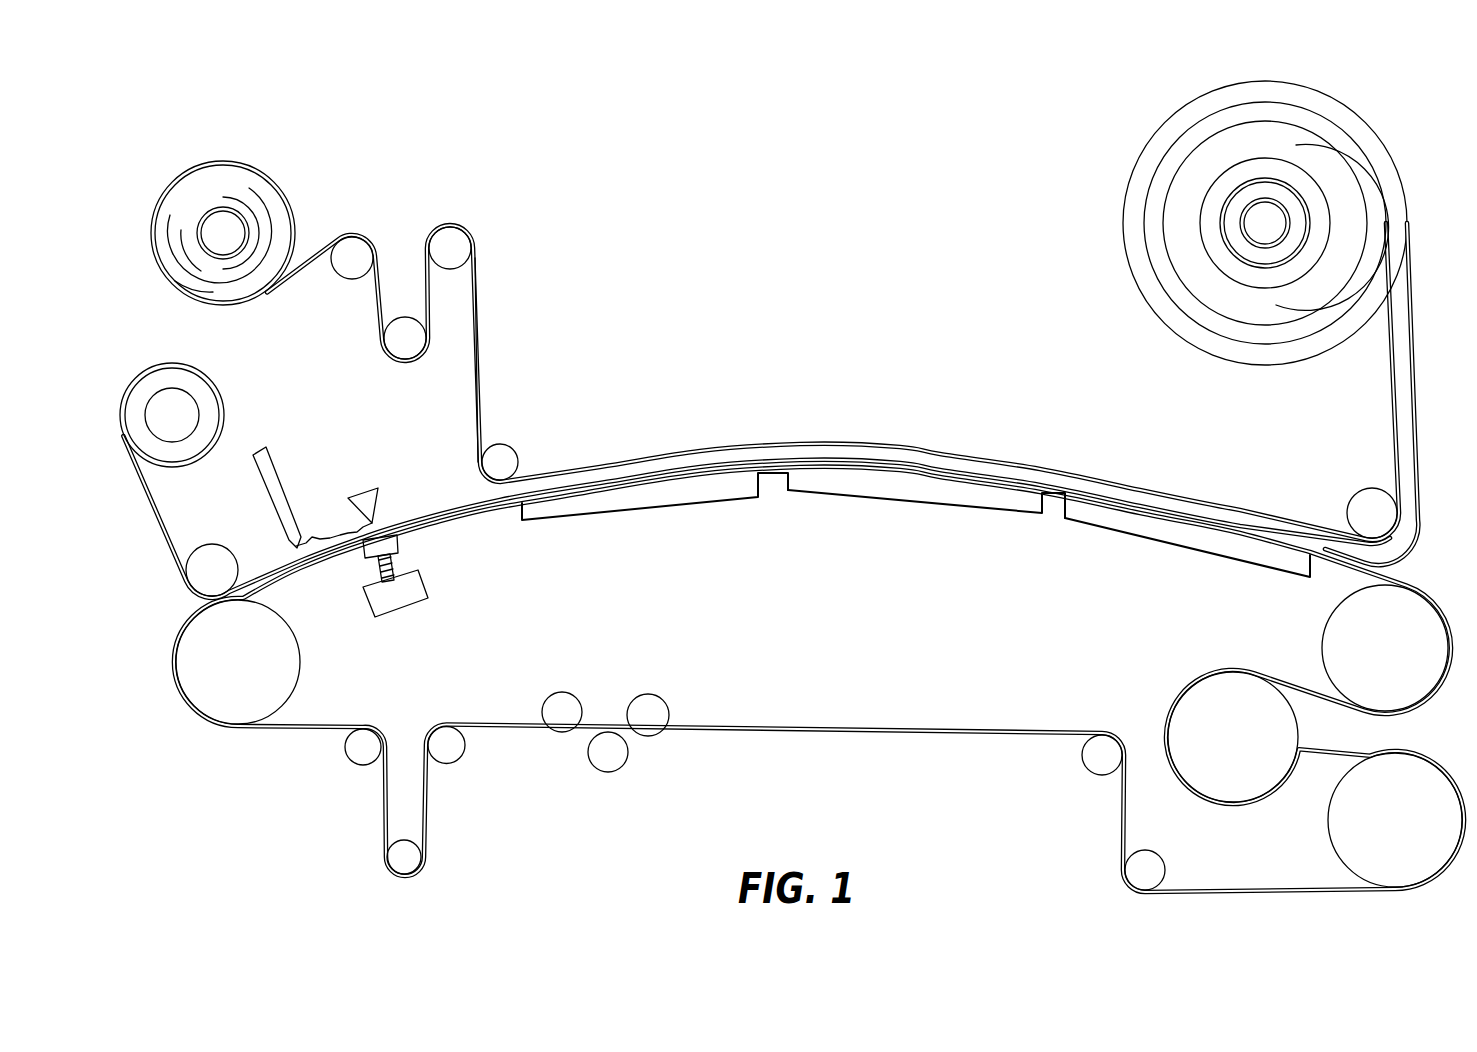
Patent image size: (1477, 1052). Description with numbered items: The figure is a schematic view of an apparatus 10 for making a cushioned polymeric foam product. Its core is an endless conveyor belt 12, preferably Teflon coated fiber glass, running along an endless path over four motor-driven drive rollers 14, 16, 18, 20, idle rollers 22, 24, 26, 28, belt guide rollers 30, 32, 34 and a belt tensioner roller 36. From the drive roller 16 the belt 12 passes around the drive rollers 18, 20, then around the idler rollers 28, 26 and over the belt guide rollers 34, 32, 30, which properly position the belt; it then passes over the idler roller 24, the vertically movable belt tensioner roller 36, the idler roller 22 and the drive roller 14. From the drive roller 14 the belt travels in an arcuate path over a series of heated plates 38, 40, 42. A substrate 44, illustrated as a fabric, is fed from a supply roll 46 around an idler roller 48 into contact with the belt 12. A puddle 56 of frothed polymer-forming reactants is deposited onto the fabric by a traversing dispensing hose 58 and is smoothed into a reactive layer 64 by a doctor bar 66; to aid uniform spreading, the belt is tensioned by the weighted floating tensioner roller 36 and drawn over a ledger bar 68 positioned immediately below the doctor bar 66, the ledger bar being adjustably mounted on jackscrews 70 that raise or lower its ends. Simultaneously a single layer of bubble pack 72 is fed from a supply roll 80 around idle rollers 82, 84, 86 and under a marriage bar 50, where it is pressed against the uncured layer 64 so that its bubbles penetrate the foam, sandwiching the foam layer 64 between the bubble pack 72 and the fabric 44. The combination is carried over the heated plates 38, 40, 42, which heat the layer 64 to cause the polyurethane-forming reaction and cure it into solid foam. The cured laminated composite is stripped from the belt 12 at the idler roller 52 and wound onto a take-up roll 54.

The apparatus 10 is at (830, 782).
The endless conveyor belt 12 is at (780, 728).
The drive roller 14 is at (275, 677).
The drive roller 16 is at (1335, 637).
The drive roller 18 is at (1192, 705).
The drive roller 20 is at (1348, 843).
The idle roller 22 is at (355, 750).
The idle roller 24 is at (443, 745).
The idle roller 26 is at (1097, 758).
The idle roller 28 is at (1143, 865).
The belt guide roller 30 is at (555, 708).
The belt guide roller 32 is at (606, 758).
The belt guide roller 34 is at (655, 708).
The belt tensioner roller 36 is at (396, 855).
The heated plate 38 is at (618, 500).
The heated plate 40 is at (887, 488).
The heated plate 42 is at (1170, 533).
The substrate 44 is at (162, 504).
The supply roll 46 is at (205, 378).
The idler roller 48 is at (212, 560).
The marriage bar 50 is at (503, 458).
The idler roller 52 is at (1358, 500).
The take-up roll 54 is at (1124, 225).
The puddle 56 is at (330, 525).
The traversing dispensing hose 58 is at (276, 467).
The reactive layer 64 is at (429, 502).
The doctor bar 66 is at (366, 496).
The ledger bar 68 is at (397, 535).
The jackscrews 70 is at (377, 575).
The bubble pack 72 is at (478, 308).
The supply roll 80 is at (240, 163).
The idle roller 82 is at (352, 248).
The idle roller 84 is at (405, 330).
The idle roller 86 is at (452, 243).